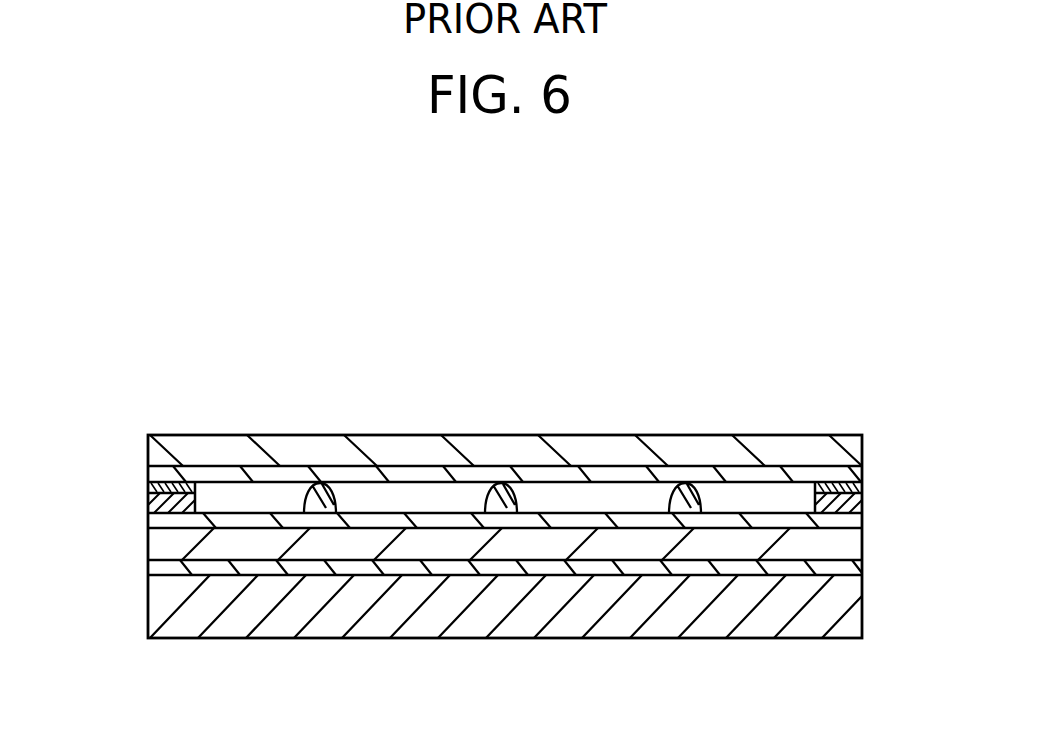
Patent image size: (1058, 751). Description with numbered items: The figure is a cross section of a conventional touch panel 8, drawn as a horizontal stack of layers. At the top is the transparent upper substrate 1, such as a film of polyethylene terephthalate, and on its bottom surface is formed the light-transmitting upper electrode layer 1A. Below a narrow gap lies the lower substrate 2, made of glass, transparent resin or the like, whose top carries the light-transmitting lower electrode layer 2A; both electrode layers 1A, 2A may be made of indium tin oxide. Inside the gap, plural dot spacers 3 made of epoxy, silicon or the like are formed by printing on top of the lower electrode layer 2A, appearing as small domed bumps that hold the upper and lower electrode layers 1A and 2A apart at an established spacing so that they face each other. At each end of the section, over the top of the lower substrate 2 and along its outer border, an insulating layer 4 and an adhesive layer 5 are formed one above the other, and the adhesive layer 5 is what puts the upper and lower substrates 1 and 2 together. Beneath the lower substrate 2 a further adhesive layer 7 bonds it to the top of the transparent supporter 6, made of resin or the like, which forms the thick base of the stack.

The upper substrate 1 is at (853, 432).
The upper electrode layer 1A is at (864, 470).
The lower substrate 2 is at (859, 545).
The lower electrode layer 2A is at (859, 520).
The dot spacers 3 is at (507, 483).
The insulating layer 4 is at (150, 512).
The adhesive layer 5 is at (148, 483).
The transparent supporter 6 is at (190, 630).
The adhesive layer 7 is at (148, 577).
The touch panel 8 is at (714, 415).